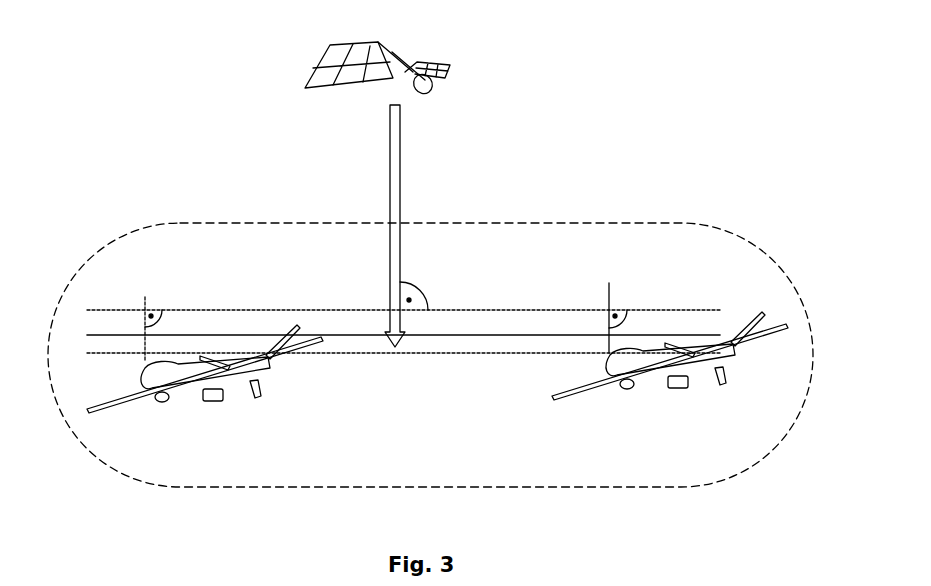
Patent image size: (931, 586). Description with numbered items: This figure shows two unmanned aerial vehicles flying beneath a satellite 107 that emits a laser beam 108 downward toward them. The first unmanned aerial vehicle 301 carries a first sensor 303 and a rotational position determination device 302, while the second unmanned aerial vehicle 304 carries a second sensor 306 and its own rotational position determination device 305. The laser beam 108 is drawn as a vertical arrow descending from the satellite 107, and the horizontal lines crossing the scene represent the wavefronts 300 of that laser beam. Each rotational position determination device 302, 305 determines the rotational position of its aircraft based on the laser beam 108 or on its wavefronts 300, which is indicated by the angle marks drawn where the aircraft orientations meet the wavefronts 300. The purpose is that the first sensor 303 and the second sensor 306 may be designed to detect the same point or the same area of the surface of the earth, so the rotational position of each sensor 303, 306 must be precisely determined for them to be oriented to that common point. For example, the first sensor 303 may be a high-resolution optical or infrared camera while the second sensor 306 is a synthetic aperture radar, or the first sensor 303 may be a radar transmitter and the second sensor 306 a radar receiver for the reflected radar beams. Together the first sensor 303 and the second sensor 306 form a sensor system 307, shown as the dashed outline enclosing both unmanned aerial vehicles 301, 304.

The satellite 107 is at (437, 53).
The laser beam 108 is at (390, 178).
The wavefronts 300 is at (488, 310).
The first unmanned aerial vehicle 301 is at (140, 423).
The rotational position determination device 302 is at (135, 370).
The first sensor 303 is at (212, 401).
The second unmanned aerial vehicle 304 is at (744, 368).
The rotational position determination device 305 is at (603, 366).
The second sensor 306 is at (677, 388).
The sensor system 307 is at (625, 223).